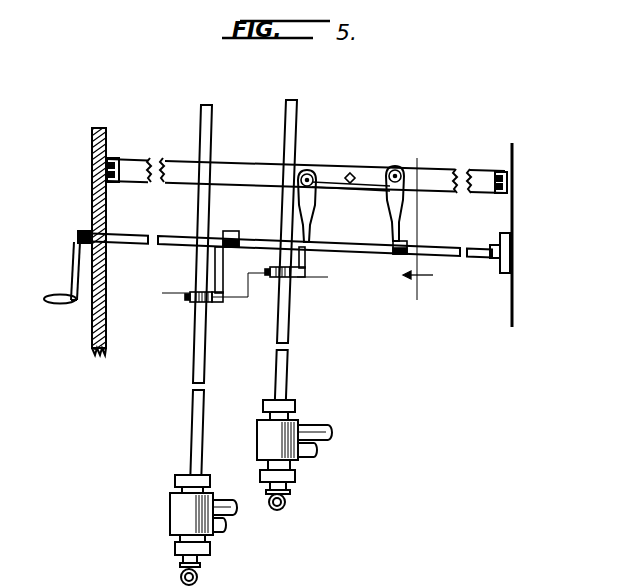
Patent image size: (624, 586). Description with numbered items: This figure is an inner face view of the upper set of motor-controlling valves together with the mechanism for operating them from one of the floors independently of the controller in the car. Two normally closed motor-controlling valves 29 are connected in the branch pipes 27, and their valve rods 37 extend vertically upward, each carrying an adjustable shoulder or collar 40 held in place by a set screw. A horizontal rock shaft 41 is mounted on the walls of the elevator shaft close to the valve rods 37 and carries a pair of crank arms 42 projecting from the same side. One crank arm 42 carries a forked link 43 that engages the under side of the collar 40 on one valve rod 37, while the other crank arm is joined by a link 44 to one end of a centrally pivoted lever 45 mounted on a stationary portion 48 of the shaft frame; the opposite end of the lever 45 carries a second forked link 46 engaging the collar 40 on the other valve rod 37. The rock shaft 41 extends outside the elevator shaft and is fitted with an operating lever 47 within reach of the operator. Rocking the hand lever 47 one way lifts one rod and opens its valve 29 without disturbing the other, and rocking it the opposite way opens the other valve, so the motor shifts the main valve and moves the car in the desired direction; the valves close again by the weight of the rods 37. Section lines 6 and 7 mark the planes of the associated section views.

The section line 6- 6 is at (418, 231).
The section line 7- 7 is at (245, 286).
The branch pipe 27 is at (319, 450).
The motor-controlling valve 29 is at (260, 437).
The valve rod 37 is at (196, 383).
The shoulder or collar 40 is at (191, 293).
The rock shaft 41 is at (160, 236).
The crank arm 42 is at (232, 230).
The forked link 43 is at (224, 279).
The link 44 is at (403, 210).
The centrally pivoted lever 45 is at (372, 176).
The forked link 46 is at (313, 215).
The operating lever 47 is at (76, 271).
The stationary portion of the frame 48 is at (163, 158).